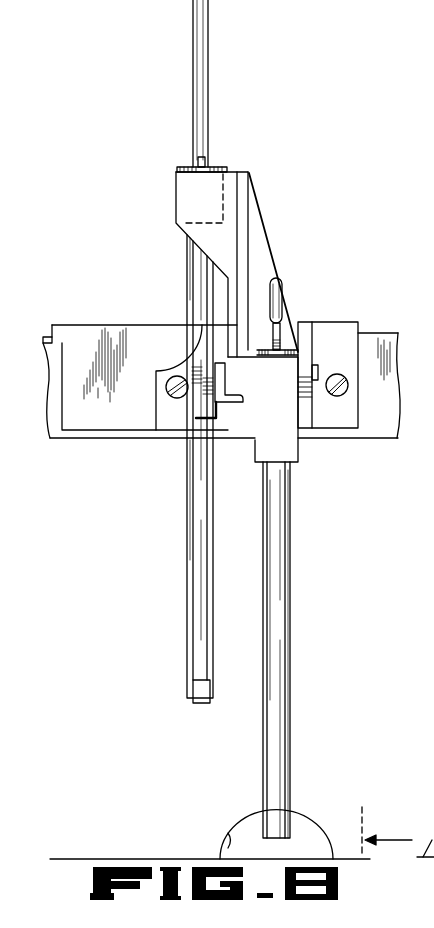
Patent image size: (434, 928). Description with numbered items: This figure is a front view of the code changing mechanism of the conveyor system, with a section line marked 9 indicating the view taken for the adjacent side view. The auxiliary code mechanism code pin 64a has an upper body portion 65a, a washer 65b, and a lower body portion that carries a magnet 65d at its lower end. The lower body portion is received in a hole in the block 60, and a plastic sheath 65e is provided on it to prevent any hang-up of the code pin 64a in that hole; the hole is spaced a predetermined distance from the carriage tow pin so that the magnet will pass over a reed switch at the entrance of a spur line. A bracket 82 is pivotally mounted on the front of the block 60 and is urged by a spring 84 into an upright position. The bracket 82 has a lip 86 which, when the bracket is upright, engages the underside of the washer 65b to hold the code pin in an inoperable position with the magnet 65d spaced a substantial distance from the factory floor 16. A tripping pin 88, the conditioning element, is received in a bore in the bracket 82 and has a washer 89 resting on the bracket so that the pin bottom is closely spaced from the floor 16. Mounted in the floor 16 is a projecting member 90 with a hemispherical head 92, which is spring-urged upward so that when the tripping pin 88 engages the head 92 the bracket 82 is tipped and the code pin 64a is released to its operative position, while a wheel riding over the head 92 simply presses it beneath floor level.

The upper body portion 65a is at (206, 33).
The washer 65b is at (183, 167).
The lip 86 is at (233, 171).
The bracket 82 is at (243, 231).
The block 60 is at (75, 327).
The washer 89 is at (288, 328).
The spring 84 is at (223, 378).
The plastic sheath 65e is at (193, 512).
The auxiliary code mechanism code pin 64a is at (186, 582).
The magnet 65d is at (192, 688).
The tripping pin 88 is at (285, 688).
The projecting member 90 is at (237, 822).
The hemispherical head 92 is at (226, 834).
The factory floor 16 is at (100, 858).
The section line 9 is at (387, 831).